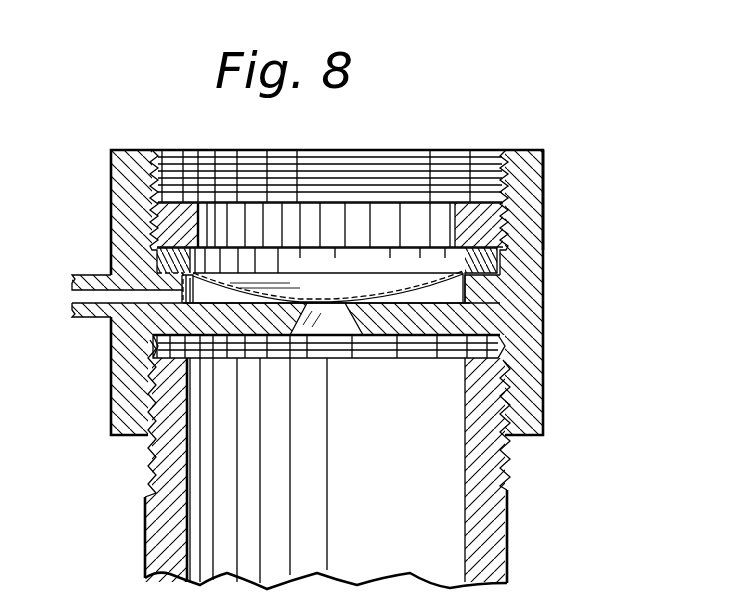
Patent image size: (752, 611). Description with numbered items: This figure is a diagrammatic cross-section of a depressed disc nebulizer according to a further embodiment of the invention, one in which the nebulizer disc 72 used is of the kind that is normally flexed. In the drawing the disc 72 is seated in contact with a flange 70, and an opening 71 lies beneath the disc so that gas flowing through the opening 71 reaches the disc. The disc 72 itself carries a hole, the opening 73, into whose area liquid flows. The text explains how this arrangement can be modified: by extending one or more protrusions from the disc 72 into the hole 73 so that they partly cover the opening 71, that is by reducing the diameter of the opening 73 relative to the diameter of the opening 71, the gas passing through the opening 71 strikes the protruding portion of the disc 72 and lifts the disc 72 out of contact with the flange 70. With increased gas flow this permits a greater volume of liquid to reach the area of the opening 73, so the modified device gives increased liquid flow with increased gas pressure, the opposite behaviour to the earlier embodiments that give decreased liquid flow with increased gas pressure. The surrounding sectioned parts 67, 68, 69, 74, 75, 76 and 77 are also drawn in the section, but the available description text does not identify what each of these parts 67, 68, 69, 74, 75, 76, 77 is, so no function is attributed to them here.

The threaded tube 67 is at (163, 527).
The housing body 68 is at (110, 362).
The upper housing portion 69 is at (528, 243).
The flange 70 is at (383, 322).
The opening 71 is at (332, 313).
The disc 72 is at (416, 292).
The opening 73 is at (332, 300).
The sealing ring 74 is at (497, 264).
The retaining ring 75 is at (478, 222).
The side tube 76 is at (92, 300).
The spacer ring 77 is at (470, 292).